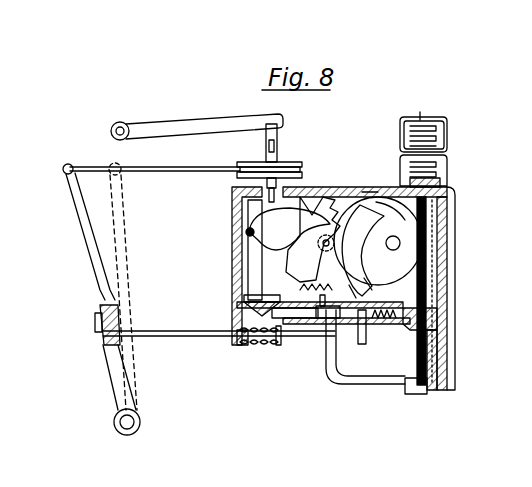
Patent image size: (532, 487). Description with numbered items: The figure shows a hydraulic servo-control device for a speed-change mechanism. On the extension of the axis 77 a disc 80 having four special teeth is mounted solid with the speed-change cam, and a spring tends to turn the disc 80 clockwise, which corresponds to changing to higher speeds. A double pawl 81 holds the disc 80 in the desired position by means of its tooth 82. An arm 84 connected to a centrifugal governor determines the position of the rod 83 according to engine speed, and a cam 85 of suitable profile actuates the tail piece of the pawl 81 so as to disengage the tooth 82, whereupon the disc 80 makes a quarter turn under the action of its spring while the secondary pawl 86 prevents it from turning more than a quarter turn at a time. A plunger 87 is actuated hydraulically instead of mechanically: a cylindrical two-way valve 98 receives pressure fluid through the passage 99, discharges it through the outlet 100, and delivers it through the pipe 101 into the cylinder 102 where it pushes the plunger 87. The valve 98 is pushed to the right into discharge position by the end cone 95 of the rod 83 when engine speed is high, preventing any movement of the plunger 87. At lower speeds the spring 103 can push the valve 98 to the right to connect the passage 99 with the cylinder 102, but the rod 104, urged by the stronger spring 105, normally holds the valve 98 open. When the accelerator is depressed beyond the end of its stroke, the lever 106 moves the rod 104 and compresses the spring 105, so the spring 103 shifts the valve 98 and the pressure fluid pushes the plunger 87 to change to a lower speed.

The axis 77 is at (395, 240).
The disc 80 is at (387, 220).
The double pawl 81 is at (313, 239).
The tooth 82 is at (372, 193).
The rod 83 is at (262, 268).
The arm 84 is at (168, 122).
The cam 85 is at (252, 207).
The secondary pawl 86 is at (378, 247).
The plunger 87 is at (421, 342).
The end cone 95 is at (242, 316).
The cylindrical two-way valve 98 is at (357, 330).
The passage 99 is at (310, 289).
The pressure fluid outlet 100 is at (354, 303).
The pipe 101 is at (341, 380).
The cylinder 102 is at (428, 385).
The spring 103 is at (390, 326).
The rod 104 is at (163, 331).
The spring 105 is at (252, 346).
The lever 106 is at (96, 291).